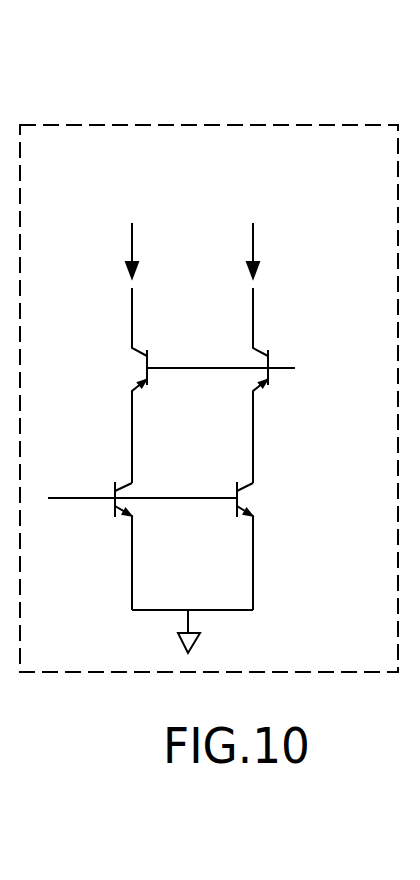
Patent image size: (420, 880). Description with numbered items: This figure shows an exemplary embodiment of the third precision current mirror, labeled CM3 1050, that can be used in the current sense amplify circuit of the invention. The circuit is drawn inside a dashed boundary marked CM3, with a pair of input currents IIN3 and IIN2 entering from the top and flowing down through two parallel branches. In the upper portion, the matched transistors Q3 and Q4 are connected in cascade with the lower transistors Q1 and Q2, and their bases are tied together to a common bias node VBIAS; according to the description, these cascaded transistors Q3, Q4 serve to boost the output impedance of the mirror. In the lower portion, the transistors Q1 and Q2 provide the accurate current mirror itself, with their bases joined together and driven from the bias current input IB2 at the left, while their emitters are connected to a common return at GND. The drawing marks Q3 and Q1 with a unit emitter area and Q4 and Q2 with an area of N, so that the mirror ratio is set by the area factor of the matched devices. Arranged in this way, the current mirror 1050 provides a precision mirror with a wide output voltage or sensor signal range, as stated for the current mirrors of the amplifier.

The current mirror CM3 1050 is at (308, 125).
The current mirror CM3 is at (209, 398).
The transistor Q1 is at (156, 546).
The transistor Q2 is at (282, 546).
The transistor Q3 is at (105, 385).
The transistor Q4 is at (229, 385).
The input current IIN3 is at (154, 250).
The input current IIN2 is at (276, 250).
The bias current IB2 is at (142, 476).
The bias voltage VBIAS is at (256, 375).
The ground GND is at (185, 634).